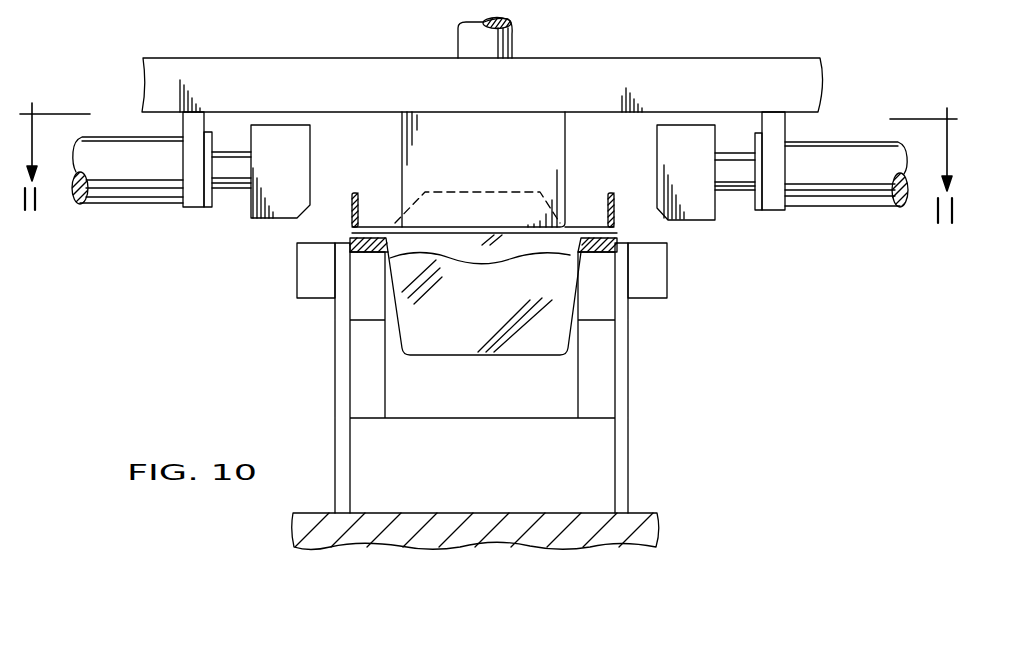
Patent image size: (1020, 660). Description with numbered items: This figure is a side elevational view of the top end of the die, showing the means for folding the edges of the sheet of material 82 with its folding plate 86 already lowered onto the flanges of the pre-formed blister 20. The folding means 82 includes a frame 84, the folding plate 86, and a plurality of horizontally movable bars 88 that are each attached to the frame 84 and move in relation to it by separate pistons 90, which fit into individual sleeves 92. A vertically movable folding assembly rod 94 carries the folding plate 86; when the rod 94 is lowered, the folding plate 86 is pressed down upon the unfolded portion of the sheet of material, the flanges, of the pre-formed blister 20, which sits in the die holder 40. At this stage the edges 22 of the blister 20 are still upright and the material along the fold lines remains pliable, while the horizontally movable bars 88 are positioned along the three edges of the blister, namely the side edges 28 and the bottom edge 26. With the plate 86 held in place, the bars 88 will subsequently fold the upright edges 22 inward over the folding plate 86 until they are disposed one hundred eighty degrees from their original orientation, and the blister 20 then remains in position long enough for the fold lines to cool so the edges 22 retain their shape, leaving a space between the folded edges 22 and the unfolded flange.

The pre-formed blister 20 is at (456, 366).
The edges 22 is at (440, 192).
The bottom edge 26 is at (510, 192).
The side edges 28 is at (352, 193).
The container holder 40 is at (648, 410).
The means for folding the edges of the sheet of material 82 is at (641, 52).
The frame 84 is at (372, 77).
The folding plate 86 is at (589, 227).
The horizontally movable bars 88 is at (280, 203).
The pistons 90 is at (234, 172).
The sleeves 92 is at (115, 175).
The folding assembly rod 94 is at (490, 47).